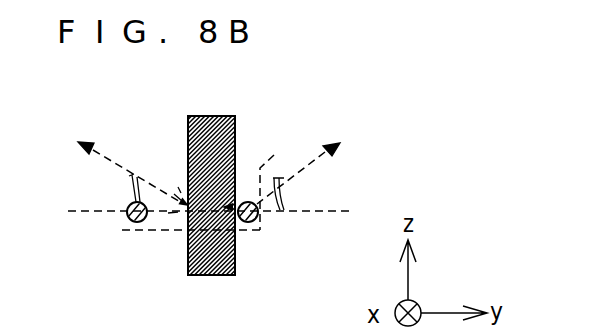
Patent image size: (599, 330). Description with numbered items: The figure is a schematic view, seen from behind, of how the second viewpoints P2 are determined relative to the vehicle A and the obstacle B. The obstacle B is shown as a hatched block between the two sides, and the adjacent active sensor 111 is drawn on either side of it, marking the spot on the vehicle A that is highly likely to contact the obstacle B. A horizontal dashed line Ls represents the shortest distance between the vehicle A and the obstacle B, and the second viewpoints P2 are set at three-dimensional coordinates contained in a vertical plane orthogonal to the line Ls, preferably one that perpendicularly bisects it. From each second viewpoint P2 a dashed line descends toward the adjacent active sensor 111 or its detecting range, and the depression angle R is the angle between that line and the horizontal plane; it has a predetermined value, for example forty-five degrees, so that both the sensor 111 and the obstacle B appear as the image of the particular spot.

The adjacent active sensor 111 is at (130, 220).
The obstacle B is at (211, 186).
The second viewpoint P2 is at (209, 164).
The vehicle A is at (276, 179).
The depression angle R is at (207, 193).
The line representing a shortest distance Ls is at (224, 210).